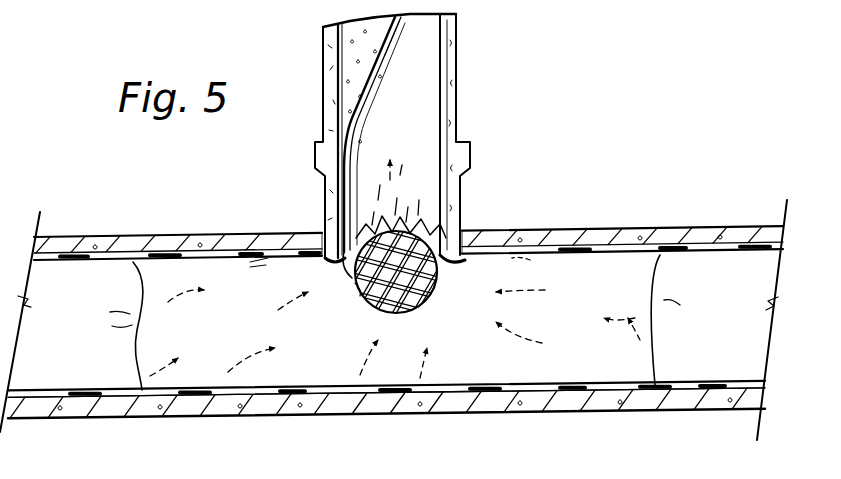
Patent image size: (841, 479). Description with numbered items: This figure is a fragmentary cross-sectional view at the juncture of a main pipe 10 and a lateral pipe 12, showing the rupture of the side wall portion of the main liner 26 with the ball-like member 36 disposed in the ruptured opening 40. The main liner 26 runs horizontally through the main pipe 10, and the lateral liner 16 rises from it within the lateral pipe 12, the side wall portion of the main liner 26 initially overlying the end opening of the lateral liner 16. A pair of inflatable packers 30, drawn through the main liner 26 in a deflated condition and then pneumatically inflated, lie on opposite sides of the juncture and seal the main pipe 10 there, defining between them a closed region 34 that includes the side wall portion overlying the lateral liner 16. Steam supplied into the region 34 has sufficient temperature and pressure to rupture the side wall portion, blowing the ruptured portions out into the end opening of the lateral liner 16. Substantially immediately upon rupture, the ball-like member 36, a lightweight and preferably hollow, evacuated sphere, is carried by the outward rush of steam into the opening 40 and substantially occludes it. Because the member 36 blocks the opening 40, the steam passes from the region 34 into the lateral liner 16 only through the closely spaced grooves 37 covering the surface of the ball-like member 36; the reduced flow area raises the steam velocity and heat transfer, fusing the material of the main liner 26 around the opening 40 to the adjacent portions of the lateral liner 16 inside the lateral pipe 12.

The pipe 10 is at (236, 420).
The fitting 12 is at (460, 100).
The lateral liner 16 is at (336, 94).
The main liner 26 is at (333, 386).
The inflatable packers 30 is at (103, 365).
The closed region 34 is at (245, 297).
The ball-like member 36 is at (395, 316).
The grooves 37 is at (357, 290).
The opening 40 is at (354, 282).